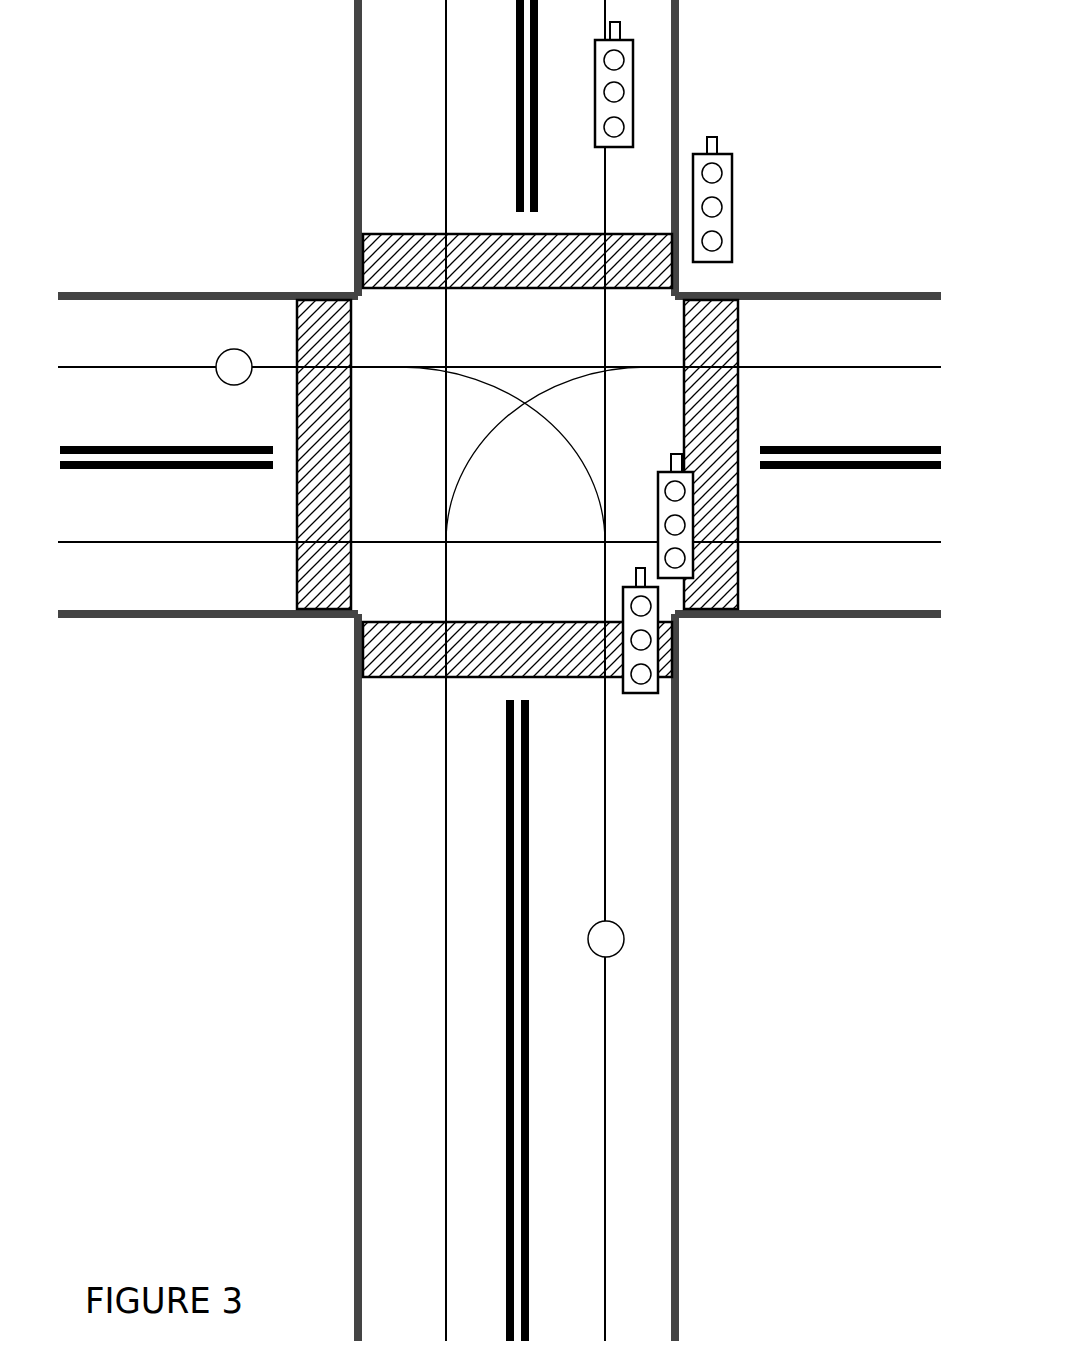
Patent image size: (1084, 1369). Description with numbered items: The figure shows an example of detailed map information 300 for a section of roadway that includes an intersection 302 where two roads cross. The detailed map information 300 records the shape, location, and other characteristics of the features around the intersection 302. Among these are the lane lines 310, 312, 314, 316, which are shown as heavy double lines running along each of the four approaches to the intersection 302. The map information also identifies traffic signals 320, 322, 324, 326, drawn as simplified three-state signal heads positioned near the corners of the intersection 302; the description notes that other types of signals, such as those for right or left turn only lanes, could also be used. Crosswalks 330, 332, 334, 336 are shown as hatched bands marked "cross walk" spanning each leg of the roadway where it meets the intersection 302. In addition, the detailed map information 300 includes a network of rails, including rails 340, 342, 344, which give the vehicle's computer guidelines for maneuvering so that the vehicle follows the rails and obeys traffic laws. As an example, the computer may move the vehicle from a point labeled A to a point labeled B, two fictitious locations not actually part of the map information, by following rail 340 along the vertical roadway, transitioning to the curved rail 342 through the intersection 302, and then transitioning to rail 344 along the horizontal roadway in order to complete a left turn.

The detailed map information 300 is at (251, 1208).
The intersection 302 is at (387, 585).
The lane line 310 is at (504, 1037).
The lane line 312 is at (903, 465).
The lane line 314 is at (518, 68).
The lane line 316 is at (200, 470).
The traffic signal 320 is at (633, 65).
The traffic signal 322 is at (688, 612).
The traffic signal 324 is at (722, 195).
The traffic signal 326 is at (650, 693).
The crosswalk 330 is at (362, 678).
The crosswalk 332 is at (757, 320).
The crosswalk 334 is at (375, 233).
The crosswalk 336 is at (310, 298).
The rail 340 is at (608, 1037).
The rail 342 is at (497, 390).
The rail 344 is at (163, 367).